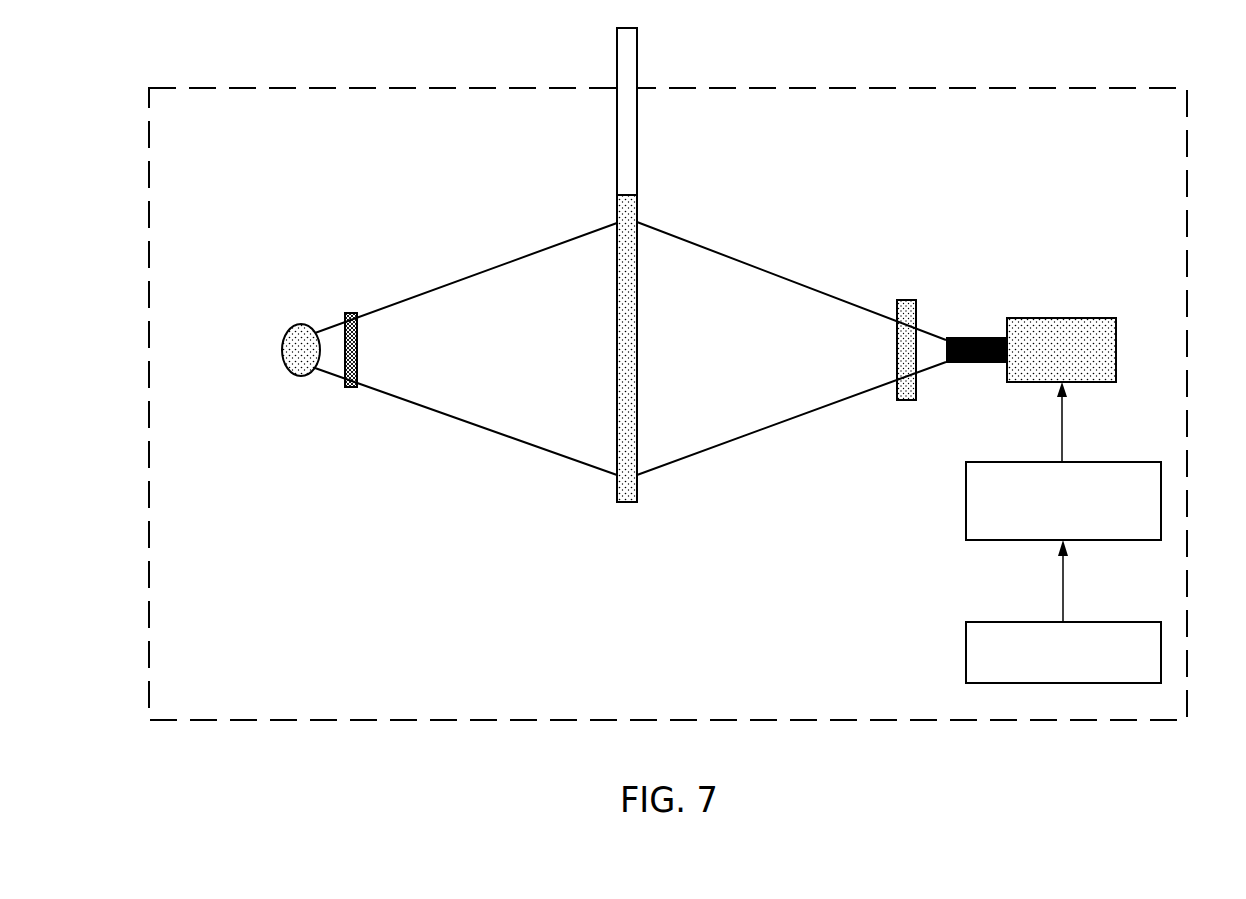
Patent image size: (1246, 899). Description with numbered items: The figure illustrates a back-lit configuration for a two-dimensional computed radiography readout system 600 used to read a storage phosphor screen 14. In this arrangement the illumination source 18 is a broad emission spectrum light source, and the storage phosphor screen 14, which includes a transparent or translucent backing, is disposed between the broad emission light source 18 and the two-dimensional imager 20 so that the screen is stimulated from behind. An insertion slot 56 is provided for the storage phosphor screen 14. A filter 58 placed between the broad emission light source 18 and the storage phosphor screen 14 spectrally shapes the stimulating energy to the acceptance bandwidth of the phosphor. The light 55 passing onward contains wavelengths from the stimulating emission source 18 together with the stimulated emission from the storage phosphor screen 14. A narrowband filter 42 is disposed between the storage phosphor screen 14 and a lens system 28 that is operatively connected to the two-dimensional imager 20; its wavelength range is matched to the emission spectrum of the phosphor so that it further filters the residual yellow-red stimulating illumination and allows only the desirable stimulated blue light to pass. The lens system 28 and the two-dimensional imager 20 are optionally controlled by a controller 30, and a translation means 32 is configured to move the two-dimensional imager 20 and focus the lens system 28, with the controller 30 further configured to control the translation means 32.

The two-dimensional computed radiography readout system 600 is at (1130, 88).
The insertion slot 56 is at (638, 62).
The storage phosphor screen 14 is at (638, 497).
The illumination source 18 is at (299, 324).
The filter 58 is at (351, 312).
The light 55 is at (822, 291).
The narrowband filter 42 is at (907, 299).
The lens system 28 is at (976, 336).
The 2D imager 20 is at (1050, 317).
The translation means 32 is at (965, 503).
The controller 30 is at (965, 655).